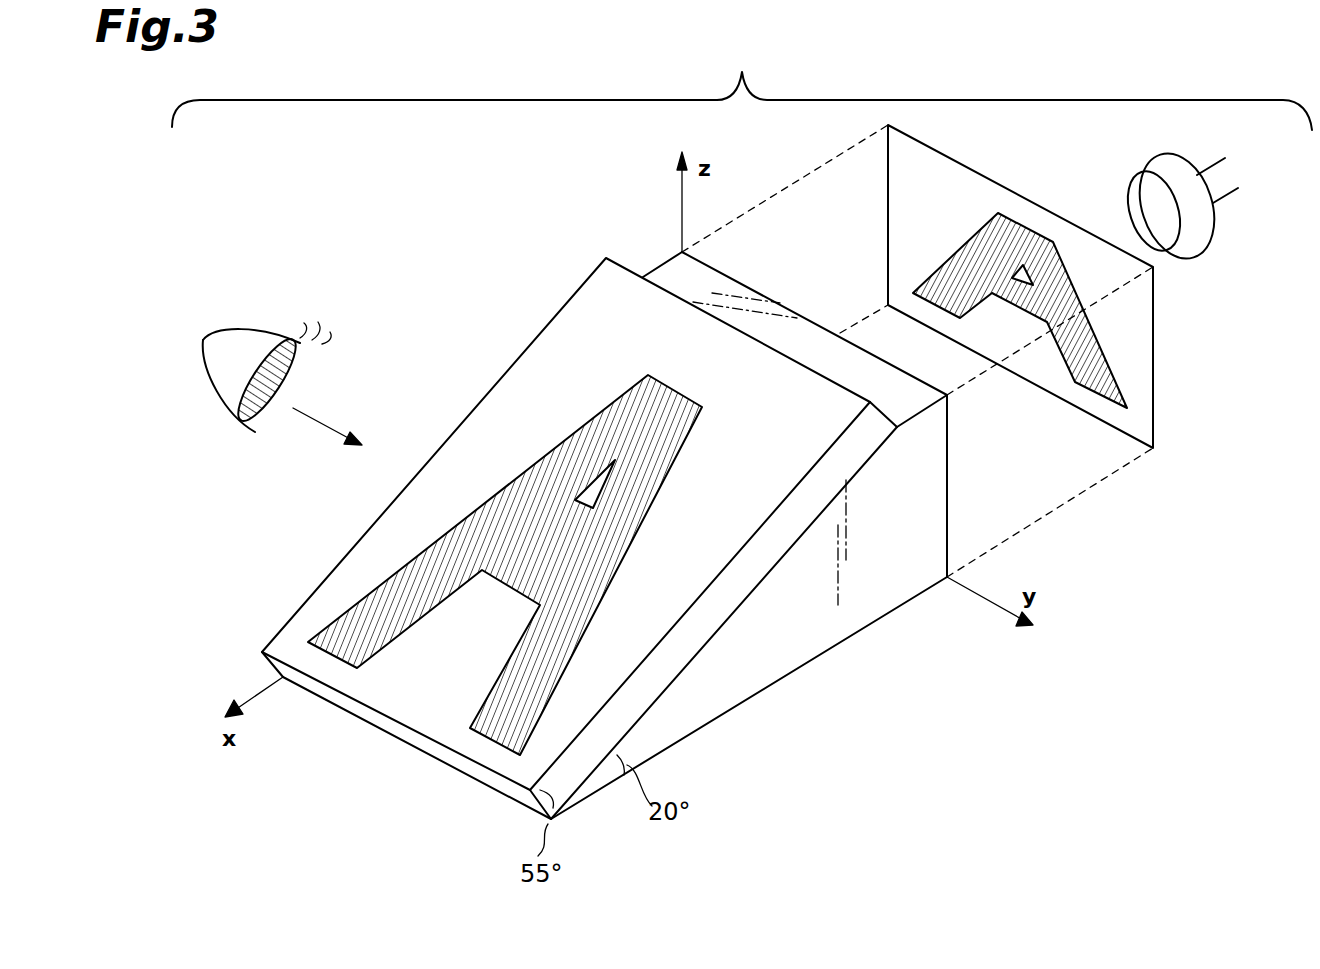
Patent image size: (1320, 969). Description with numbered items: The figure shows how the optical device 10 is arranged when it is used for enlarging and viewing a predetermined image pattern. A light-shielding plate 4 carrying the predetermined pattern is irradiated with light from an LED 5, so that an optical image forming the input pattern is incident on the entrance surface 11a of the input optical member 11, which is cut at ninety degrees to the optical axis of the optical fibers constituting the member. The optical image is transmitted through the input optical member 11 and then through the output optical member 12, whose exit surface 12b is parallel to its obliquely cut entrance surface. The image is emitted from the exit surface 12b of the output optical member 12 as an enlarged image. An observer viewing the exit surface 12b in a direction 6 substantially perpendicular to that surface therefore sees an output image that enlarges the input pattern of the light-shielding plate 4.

The light-shielding plate 4 is at (1155, 338).
The LED 5 is at (1208, 250).
The viewing direction 6 is at (313, 417).
The optical device 10 is at (455, 355).
The input optical member 11 is at (863, 593).
The entrance surface 11a is at (923, 488).
The output optical member 12 is at (597, 285).
The exit surface 12b is at (467, 733).